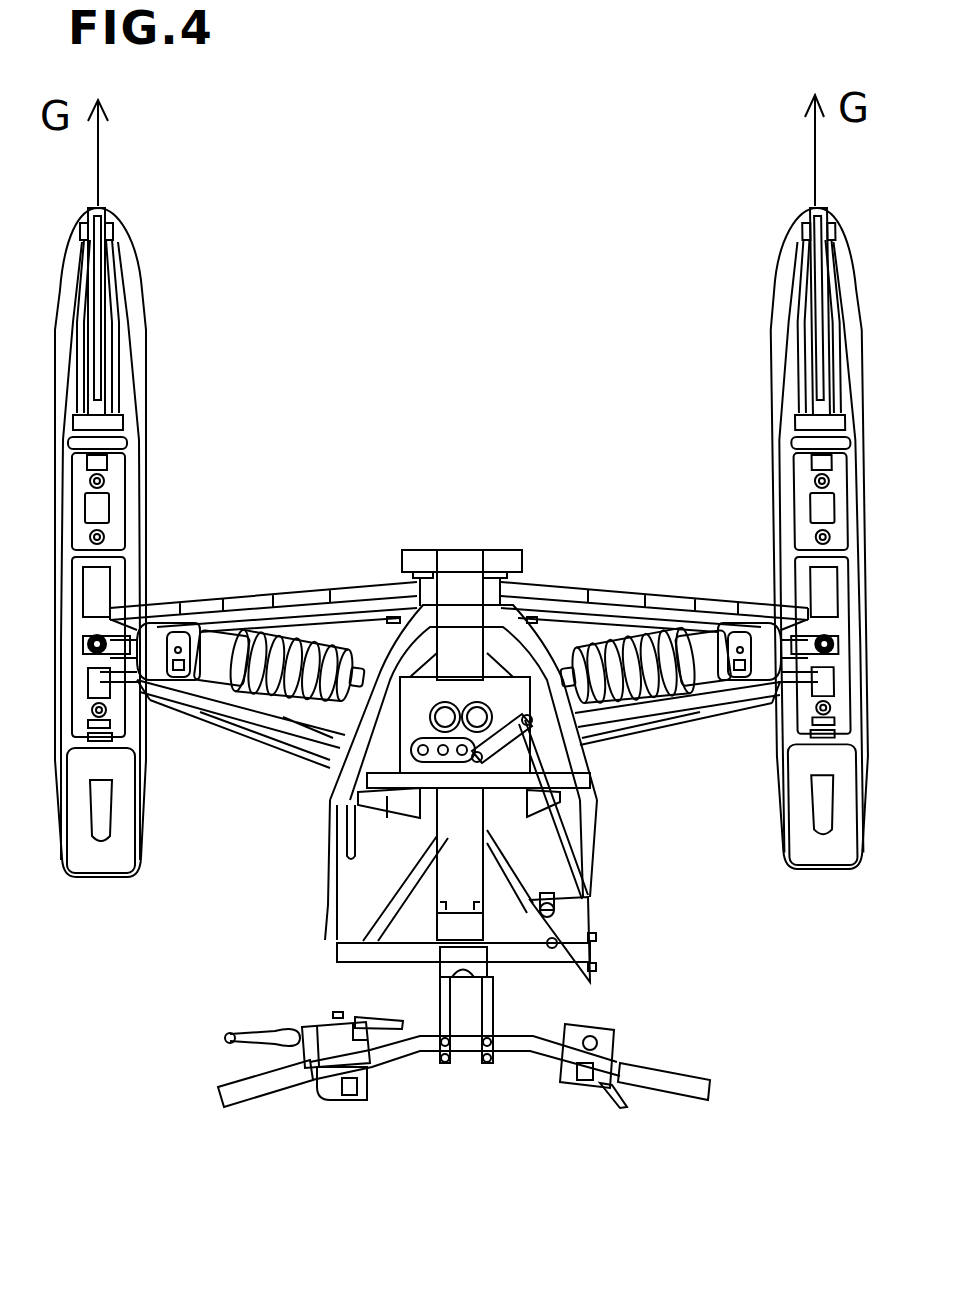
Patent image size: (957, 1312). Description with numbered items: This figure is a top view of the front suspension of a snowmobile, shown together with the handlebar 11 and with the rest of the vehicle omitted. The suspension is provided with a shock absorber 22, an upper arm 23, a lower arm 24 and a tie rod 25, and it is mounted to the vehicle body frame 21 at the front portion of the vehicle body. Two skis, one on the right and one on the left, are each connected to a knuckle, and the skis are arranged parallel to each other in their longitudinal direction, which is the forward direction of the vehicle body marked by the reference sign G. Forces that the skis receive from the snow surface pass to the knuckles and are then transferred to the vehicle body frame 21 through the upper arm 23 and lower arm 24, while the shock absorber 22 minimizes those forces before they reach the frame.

The handlebar 11 is at (578, 1138).
The vehicle body frame 21 is at (522, 592).
The shock absorber 22 is at (320, 635).
The upper arm 23 is at (270, 613).
The lower arm 24 is at (227, 604).
The tie rod 25 is at (220, 707).